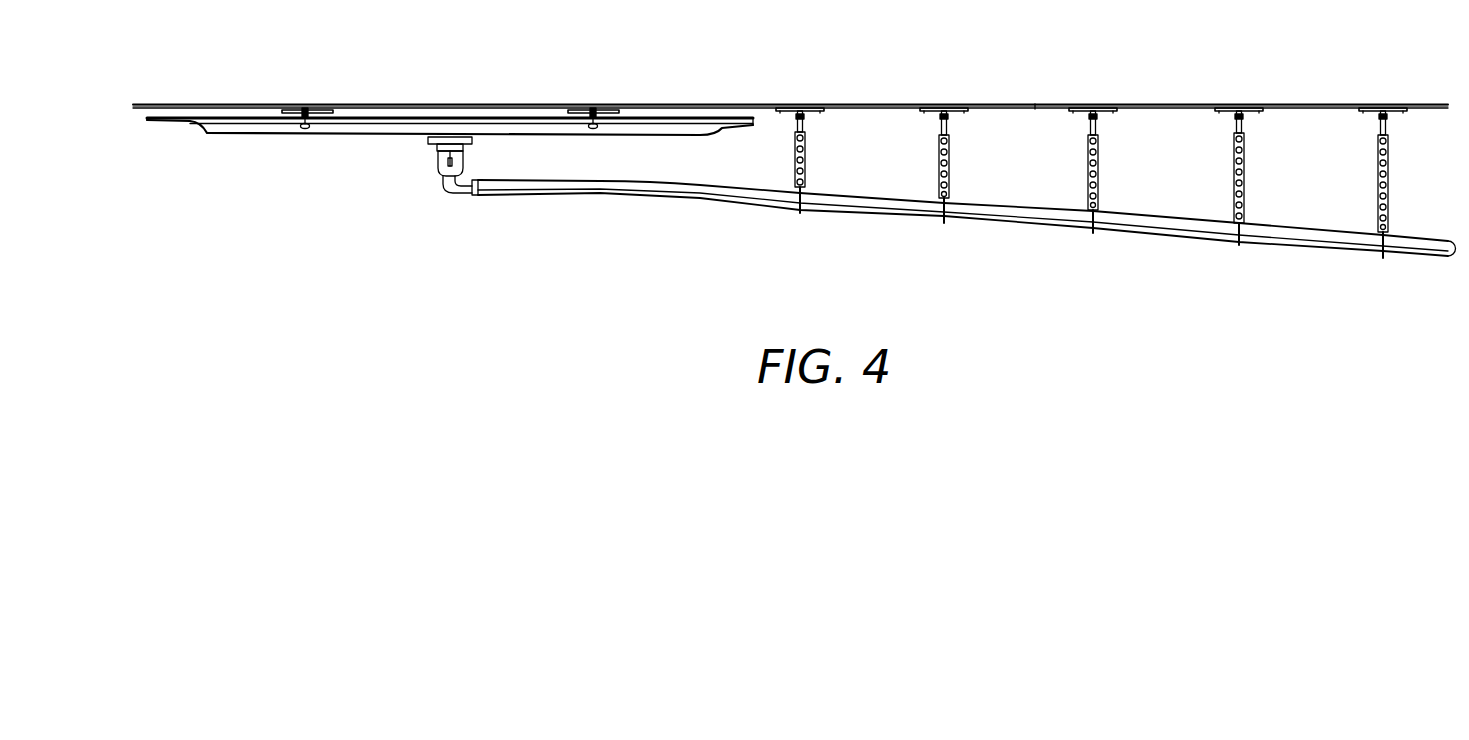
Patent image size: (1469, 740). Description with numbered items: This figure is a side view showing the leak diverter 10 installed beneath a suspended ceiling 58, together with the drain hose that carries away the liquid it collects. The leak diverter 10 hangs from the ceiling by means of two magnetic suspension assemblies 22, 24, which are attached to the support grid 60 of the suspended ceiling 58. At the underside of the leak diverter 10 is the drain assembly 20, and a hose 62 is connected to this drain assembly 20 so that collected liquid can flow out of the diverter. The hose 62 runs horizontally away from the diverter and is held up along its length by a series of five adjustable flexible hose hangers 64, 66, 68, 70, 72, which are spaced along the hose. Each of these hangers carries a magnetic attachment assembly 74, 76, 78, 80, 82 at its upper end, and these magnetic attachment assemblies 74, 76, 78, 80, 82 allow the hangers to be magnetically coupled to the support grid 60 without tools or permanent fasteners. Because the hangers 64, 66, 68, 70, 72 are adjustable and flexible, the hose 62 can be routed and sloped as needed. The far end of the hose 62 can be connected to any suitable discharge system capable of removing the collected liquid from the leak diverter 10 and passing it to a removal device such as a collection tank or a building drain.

The leak diverter 10 is at (355, 140).
The drain assembly 20 is at (442, 215).
The magnetic suspension assembly 22 is at (334, 113).
The magnetic suspension assembly 24 is at (617, 112).
The suspended ceiling 58 is at (1012, 105).
The support grid 60 is at (725, 107).
The hose 62 is at (636, 197).
The adjustable flexible hose hanger 64 is at (806, 165).
The adjustable flexible hose hanger 66 is at (950, 178).
The adjustable flexible hose hanger 68 is at (1099, 175).
The adjustable flexible hose hanger 70 is at (1245, 182).
The adjustable flexible hose hanger 72 is at (1389, 182).
The magnetic attachment assembly 74 is at (812, 112).
The magnetic attachment assembly 76 is at (956, 112).
The magnetic attachment assembly 78 is at (1105, 112).
The magnetic attachment assembly 80 is at (1252, 112).
The magnetic attachment assembly 82 is at (1395, 112).